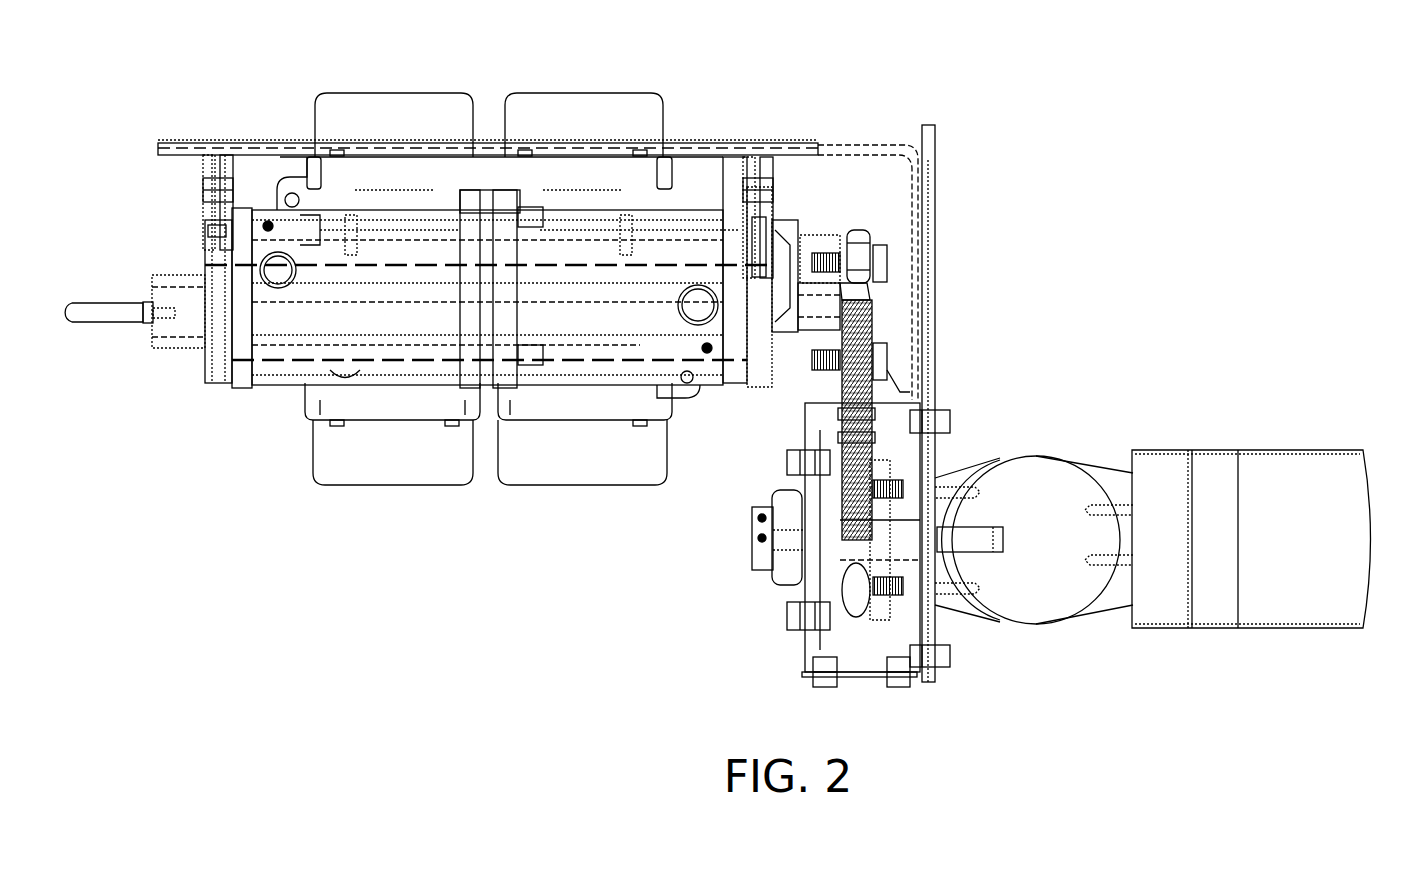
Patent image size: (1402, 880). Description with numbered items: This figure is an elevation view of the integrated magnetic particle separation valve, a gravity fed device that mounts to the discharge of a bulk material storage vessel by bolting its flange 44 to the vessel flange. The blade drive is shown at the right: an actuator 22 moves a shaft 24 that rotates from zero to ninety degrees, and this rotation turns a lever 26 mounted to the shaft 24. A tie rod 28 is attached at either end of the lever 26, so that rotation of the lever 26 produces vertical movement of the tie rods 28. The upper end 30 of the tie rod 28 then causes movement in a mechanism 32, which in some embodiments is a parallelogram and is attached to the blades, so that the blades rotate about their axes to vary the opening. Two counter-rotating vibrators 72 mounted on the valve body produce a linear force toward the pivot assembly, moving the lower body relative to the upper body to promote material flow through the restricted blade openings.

The actuator 22 is at (1293, 448).
The shaft 24 is at (942, 537).
The lever 26 is at (812, 248).
The tie rod 28 is at (210, 212).
The upper end of the tie rod 30 is at (885, 240).
The mechanism 32 is at (935, 163).
The flange 44 is at (160, 153).
The counter-rotating vibrators 72 is at (358, 105).